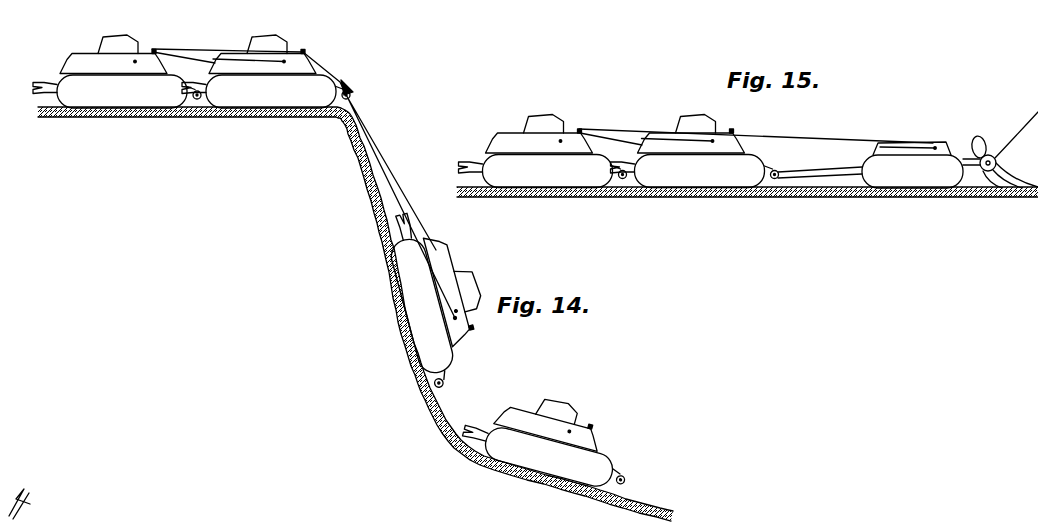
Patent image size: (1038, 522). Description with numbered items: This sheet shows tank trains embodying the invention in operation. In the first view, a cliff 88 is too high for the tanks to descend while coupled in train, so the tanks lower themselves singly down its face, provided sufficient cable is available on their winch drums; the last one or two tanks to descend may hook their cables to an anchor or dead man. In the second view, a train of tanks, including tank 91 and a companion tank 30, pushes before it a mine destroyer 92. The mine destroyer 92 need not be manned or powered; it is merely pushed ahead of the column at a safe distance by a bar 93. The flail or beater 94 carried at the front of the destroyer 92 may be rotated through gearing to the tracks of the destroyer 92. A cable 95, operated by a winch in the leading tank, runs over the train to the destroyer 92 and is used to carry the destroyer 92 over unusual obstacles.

In FIG. 14, the cliff 88 is at (370, 173).
In FIG. 15, the tank 91 is at (553, 181).
In FIG. 15, the tracked vehicle 30 is at (708, 181).
In FIG. 15, the mine destroyer 92 is at (925, 181).
In FIG. 15, the bar 93 is at (817, 169).
In FIG. 15, the flail or beater 94 is at (992, 155).
In FIG. 15, the cable 95 is at (817, 136).